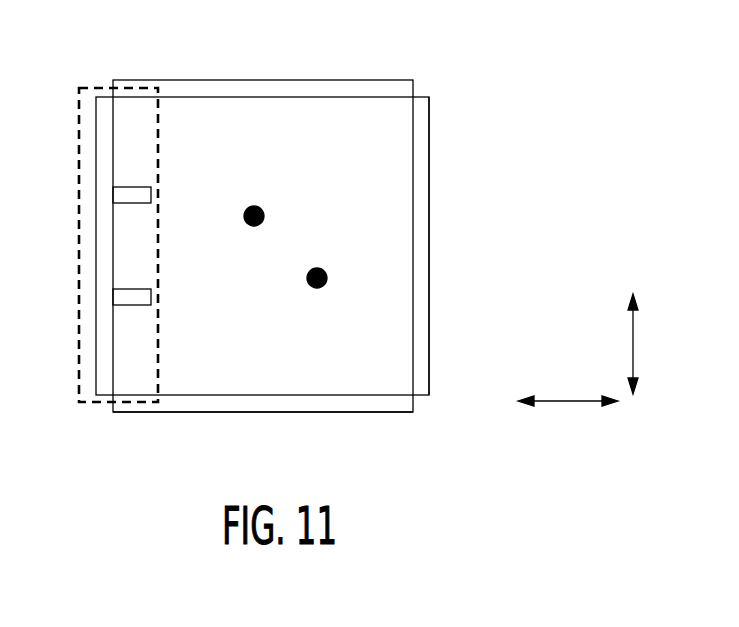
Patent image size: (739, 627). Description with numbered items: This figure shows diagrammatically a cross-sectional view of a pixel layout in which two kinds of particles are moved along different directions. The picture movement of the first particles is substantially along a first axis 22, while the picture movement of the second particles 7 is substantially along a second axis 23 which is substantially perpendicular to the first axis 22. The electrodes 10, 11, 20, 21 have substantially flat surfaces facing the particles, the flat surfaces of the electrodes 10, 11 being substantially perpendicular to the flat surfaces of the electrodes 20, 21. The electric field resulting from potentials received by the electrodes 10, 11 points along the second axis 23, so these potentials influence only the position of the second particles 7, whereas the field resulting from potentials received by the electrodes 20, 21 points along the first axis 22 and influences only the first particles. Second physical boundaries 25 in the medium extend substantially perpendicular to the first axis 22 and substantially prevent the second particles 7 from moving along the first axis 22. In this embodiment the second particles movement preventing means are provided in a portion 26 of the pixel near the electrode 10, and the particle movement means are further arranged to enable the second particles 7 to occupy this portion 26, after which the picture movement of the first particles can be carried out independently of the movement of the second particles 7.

The second particles 7 is at (328, 277).
The electrode 10 is at (105, 128).
The electrode 11 is at (420, 243).
The electrode 20 is at (280, 88).
The electrode 21 is at (221, 403).
The first axis 22 is at (623, 344).
The second axis 23 is at (568, 391).
The second physical boundaries 25 is at (123, 195).
The portion of the pixel 26 is at (97, 87).